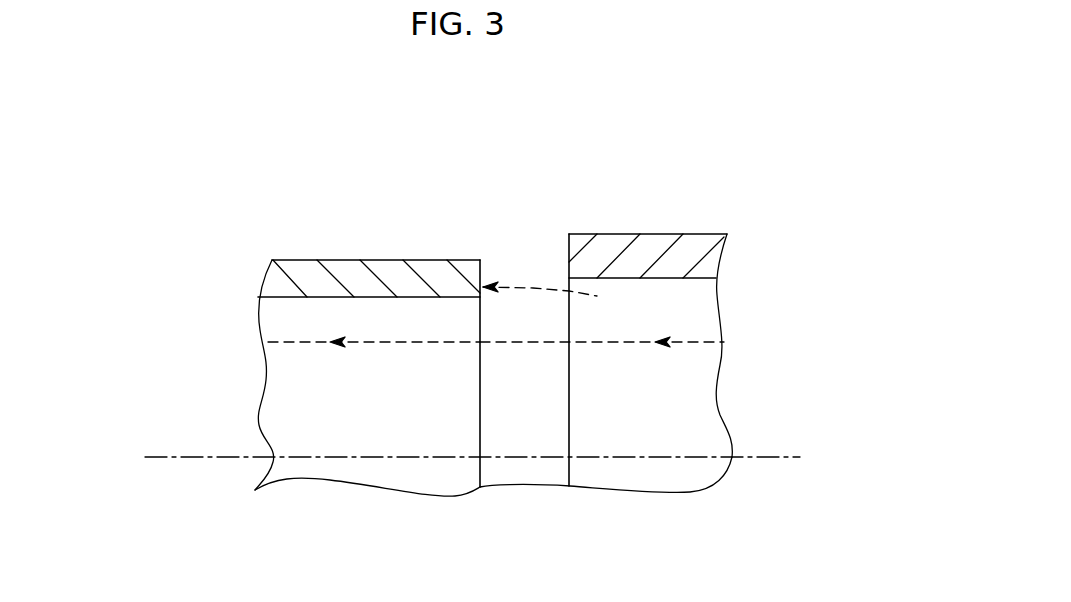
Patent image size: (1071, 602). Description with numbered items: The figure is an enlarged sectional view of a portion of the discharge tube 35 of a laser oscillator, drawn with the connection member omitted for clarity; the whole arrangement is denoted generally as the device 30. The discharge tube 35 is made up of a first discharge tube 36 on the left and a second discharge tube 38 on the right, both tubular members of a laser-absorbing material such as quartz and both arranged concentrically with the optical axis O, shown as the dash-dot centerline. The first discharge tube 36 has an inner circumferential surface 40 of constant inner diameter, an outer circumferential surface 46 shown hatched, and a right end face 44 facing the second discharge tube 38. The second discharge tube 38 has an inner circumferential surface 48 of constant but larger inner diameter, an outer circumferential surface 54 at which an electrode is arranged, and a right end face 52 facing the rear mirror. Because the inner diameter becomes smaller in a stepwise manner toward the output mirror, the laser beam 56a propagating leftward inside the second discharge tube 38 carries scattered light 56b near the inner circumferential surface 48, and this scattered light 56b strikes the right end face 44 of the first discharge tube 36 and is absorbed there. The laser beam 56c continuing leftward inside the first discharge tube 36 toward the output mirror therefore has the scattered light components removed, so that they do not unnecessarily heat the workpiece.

The rotating electric machine 30 is at (736, 118).
The discharge tube 35 is at (463, 186).
The first discharge tube 36 is at (388, 244).
The second discharge tube 38 is at (628, 200).
The inner circumferential surface 40 is at (290, 297).
The right end face 44 is at (480, 470).
The outer circumferential surface 46 is at (339, 260).
The inner circumferential surface 48 is at (672, 278).
The right end face 52 is at (570, 428).
The outer circumferential surface 54 is at (703, 234).
The laser beam 56a is at (700, 342).
The scattered light 56b is at (533, 288).
The laser beam 56c is at (345, 344).
The optical axis O is at (161, 455).